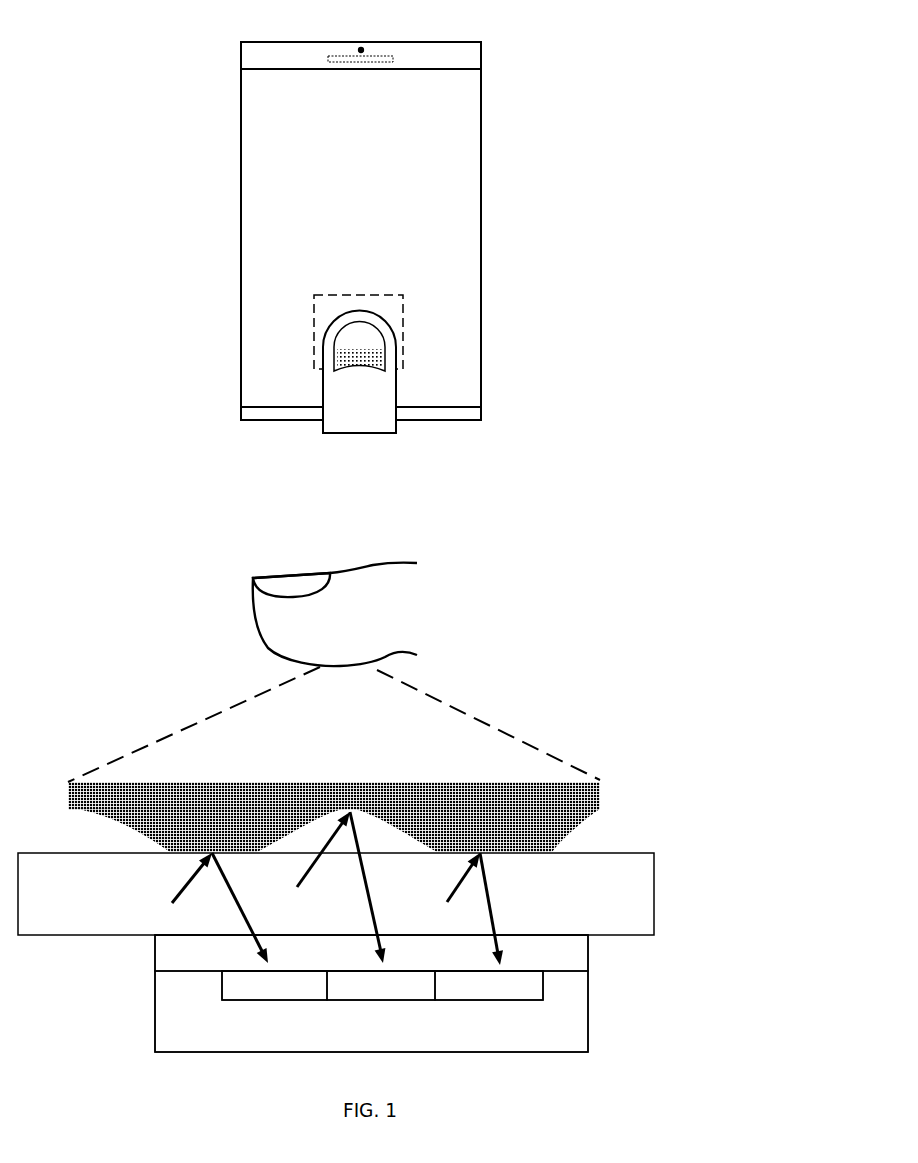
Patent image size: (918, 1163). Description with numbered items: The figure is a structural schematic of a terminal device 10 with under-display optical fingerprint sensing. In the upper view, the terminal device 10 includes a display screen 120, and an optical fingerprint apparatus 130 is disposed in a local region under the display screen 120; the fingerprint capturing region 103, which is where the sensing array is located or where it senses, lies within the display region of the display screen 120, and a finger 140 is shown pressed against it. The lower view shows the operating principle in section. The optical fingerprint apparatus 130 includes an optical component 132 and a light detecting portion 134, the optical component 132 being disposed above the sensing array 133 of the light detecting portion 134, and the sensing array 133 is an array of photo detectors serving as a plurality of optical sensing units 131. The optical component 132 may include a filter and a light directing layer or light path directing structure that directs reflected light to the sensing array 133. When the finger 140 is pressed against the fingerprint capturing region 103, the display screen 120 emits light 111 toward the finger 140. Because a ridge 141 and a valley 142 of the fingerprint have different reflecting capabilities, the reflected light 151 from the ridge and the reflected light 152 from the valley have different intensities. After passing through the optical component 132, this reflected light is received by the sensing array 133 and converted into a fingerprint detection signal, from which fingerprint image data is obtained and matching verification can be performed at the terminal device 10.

The terminal device 10 is at (223, 21).
The display screen 120 is at (479, 235).
The fingerprint capturing region 103 is at (403, 331).
The finger 140 is at (360, 420).
The valley 142 is at (334, 783).
The ridge 141 is at (334, 830).
The light 111 is at (307, 864).
The reflected light from the ridge 151 is at (374, 909).
The reflected light from the valley 152 is at (375, 887).
The optical fingerprint apparatus 130 is at (758, 932).
The optical component 132 is at (588, 952).
The light detecting portion 134 is at (588, 1010).
The sensing array 133 is at (218, 985).
The optical sensing units 131 is at (382, 985).